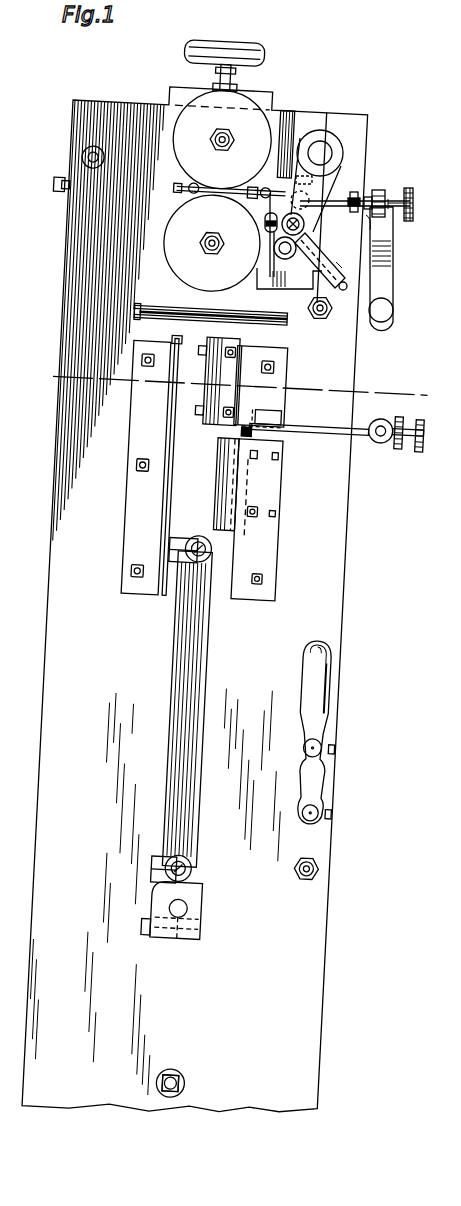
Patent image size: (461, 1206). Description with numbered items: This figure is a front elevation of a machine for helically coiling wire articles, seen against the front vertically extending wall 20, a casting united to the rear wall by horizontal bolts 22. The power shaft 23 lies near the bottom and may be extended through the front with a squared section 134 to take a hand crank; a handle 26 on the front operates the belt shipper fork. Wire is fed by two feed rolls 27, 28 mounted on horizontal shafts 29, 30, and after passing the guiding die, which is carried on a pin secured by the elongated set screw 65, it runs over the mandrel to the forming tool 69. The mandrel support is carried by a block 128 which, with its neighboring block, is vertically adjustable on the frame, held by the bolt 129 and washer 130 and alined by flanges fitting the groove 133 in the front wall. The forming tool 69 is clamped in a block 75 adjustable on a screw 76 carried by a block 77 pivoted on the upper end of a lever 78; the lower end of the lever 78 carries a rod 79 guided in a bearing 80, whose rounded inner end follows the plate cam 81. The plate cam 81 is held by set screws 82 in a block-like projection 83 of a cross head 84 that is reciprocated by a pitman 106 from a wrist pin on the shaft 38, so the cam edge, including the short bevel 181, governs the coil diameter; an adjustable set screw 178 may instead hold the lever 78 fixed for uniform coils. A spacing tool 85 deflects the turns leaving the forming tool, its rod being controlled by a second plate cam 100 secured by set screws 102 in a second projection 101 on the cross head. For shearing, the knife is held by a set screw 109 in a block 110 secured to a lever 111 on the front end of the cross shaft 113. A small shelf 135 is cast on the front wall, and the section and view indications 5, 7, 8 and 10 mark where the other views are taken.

The front vertically extending wall 20 is at (100, 93).
The bolts 22 is at (82, 157).
The power shaft 23 is at (184, 1083).
The handle 26 is at (328, 686).
The feed roll 27 is at (223, 115).
The feed roll 28 is at (212, 243).
The shaft 29 is at (217, 144).
The shaft 30 is at (215, 248).
The shaft 38 is at (188, 908).
The elongated set screw 65 is at (63, 193).
The forming tool 69 is at (306, 232).
The block 75 is at (352, 194).
The screw 76 is at (371, 200).
The block 77 is at (388, 212).
The lever 78 is at (393, 255).
The rod 79 is at (327, 433).
The bearing 80 is at (283, 427).
The plate cam 81 is at (233, 420).
The set screws 82 is at (229, 352).
The block-like projection 83 is at (213, 393).
The cross head 84 is at (167, 465).
The spacing tool 85 is at (273, 278).
The second plate cam 100 is at (262, 470).
The second block-like projection 101 is at (268, 523).
The set screws 102 is at (256, 505).
The pitman 106 is at (172, 700).
The set screw 109 is at (342, 268).
The block 110 is at (322, 260).
The lever 111 is at (308, 240).
The cross shaft 113 is at (325, 153).
The block 128 is at (266, 176).
The bolt 129 is at (287, 256).
The washer 130 is at (337, 309).
The groove 133 is at (295, 150).
The squared section 134 is at (163, 1093).
The shelf or table 135 is at (153, 306).
The adjustable set screw 178 is at (420, 448).
The beveled edge 181 is at (262, 405).
The section line 5 is at (52, 364).
The section line 7 is at (276, 172).
The section line 8 is at (398, 175).
The view arrow 10 is at (262, 181).